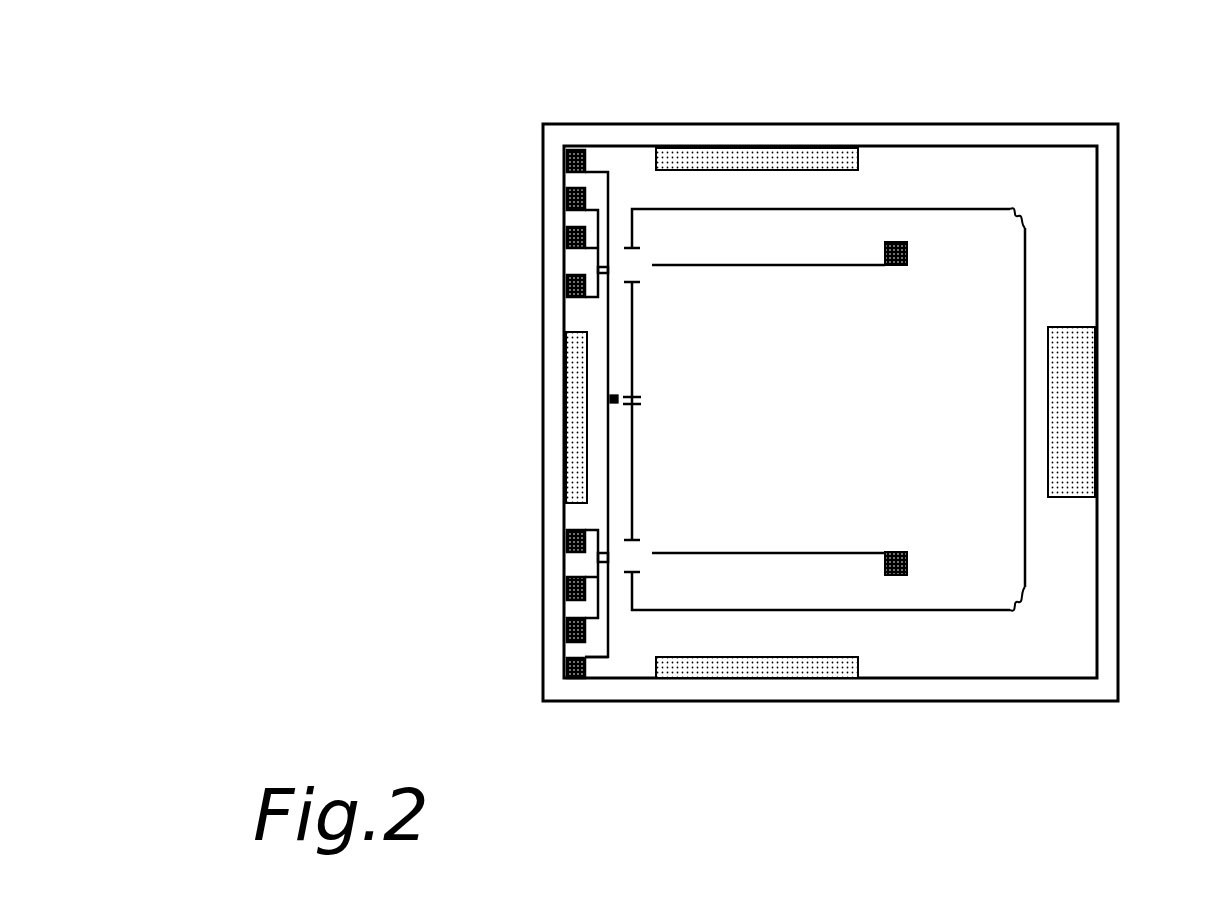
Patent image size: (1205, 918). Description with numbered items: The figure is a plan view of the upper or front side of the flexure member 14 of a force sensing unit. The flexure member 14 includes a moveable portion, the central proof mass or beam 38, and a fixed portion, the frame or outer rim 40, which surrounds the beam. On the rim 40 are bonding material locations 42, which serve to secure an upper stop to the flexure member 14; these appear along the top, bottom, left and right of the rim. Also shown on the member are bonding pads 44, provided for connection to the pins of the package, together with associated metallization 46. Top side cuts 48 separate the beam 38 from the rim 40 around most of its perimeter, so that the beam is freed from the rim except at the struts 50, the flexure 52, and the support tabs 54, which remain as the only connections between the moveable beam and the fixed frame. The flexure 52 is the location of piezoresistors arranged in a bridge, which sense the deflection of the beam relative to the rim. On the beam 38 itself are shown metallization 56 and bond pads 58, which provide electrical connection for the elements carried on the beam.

The flexure member 14 is at (830, 362).
The beam 38 is at (843, 440).
The rim 40 is at (830, 412).
The bonding material locations 42 is at (672, 148).
The bonding pads 44 is at (540, 680).
The metallization 46 is at (608, 642).
The top side cuts 48 is at (770, 209).
The struts 50 is at (637, 268).
The flexure 52 is at (641, 397).
The support tabs 54 is at (1012, 210).
The metallization 56 is at (810, 267).
The bond pads 58 is at (907, 250).